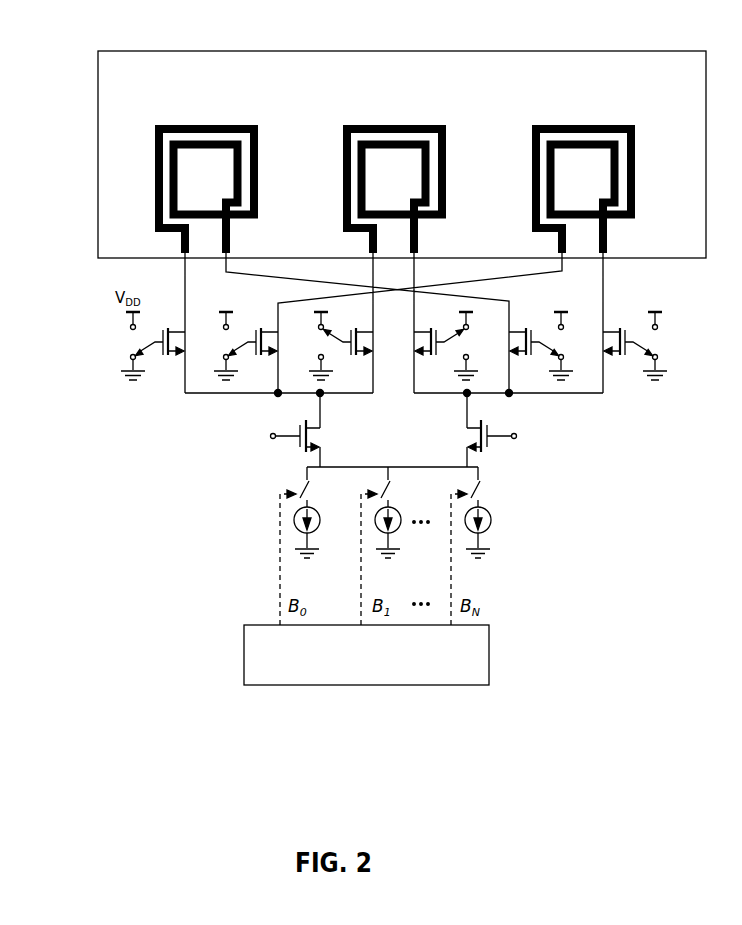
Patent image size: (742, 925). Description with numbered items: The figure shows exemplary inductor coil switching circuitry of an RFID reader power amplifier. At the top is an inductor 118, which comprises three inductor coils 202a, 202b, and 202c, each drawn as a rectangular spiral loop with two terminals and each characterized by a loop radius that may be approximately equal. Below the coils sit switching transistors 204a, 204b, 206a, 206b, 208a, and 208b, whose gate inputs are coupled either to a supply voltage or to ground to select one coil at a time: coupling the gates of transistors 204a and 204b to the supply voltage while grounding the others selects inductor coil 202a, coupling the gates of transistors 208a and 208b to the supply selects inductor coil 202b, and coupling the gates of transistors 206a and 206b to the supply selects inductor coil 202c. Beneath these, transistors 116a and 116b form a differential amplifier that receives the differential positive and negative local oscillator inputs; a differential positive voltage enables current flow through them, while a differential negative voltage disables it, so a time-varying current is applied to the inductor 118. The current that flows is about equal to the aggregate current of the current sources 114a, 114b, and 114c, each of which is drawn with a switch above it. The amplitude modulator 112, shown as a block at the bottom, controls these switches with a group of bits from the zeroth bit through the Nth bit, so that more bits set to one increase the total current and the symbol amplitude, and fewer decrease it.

The inductor 118 is at (98, 70).
The inductor coil 202a is at (163, 127).
The inductor coil 202b is at (363, 127).
The inductor coil 202c is at (553, 127).
The transistor 204a is at (182, 324).
The transistor 204b is at (550, 324).
The transistor 206a is at (276, 324).
The transistor 206b is at (643, 324).
The transistor 208a is at (371, 324).
The transistor 208b is at (454, 324).
The transistor 116a is at (313, 440).
The transistor 116b is at (474, 440).
The current source 114a is at (313, 510).
The current source 114b is at (395, 510).
The current source 114c is at (486, 510).
The amplitude modulator 112 is at (477, 674).